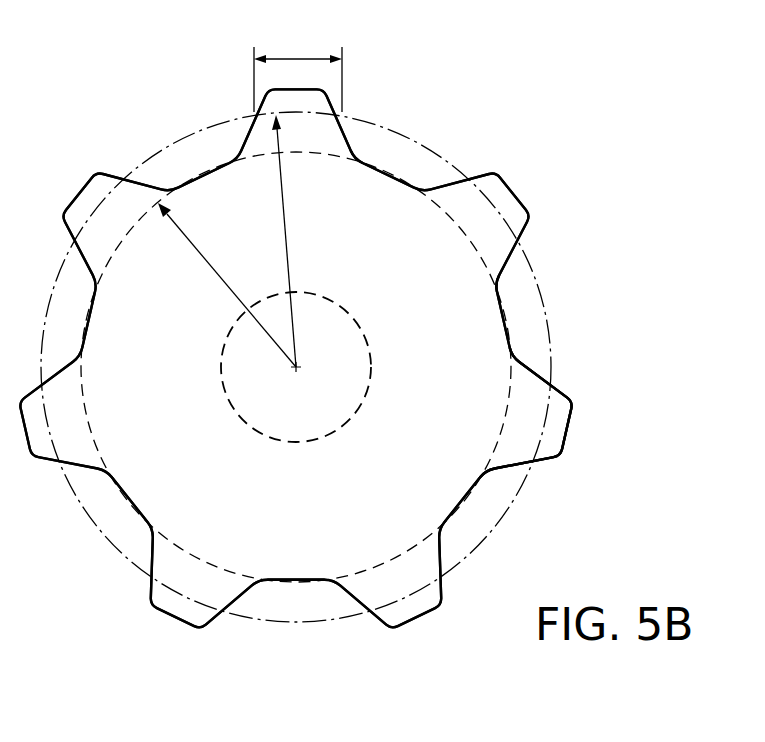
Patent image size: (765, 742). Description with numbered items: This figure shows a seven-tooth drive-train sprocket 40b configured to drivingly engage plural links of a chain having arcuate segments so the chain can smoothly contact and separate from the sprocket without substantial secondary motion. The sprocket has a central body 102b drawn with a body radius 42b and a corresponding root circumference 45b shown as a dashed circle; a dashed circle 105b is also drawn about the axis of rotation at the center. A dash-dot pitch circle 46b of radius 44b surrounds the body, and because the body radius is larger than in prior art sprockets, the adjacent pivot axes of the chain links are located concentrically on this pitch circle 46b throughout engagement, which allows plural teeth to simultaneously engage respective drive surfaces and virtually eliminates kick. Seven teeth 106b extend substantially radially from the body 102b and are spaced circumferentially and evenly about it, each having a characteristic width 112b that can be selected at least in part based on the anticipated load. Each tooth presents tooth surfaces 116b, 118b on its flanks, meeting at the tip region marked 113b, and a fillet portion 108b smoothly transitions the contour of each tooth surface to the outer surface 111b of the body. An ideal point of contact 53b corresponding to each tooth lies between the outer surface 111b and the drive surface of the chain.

The sprocket 40b is at (126, 91).
The body 102b is at (377, 257).
The pitch circle 46b is at (192, 134).
The root circumference 45b is at (88, 417).
The central bore 105b is at (355, 413).
The pitch circle radius 44b is at (280, 184).
The body radius 42b is at (222, 279).
The tooth width 112b is at (290, 58).
The ideal point of contact 53b is at (359, 163).
The fillet portion 108b is at (512, 356).
The tooth surface 116b is at (549, 381).
The tooth 106b is at (555, 413).
The tooth tip corner 113b is at (568, 440).
The tooth surface 118b is at (533, 463).
The outer surface 111b is at (290, 580).